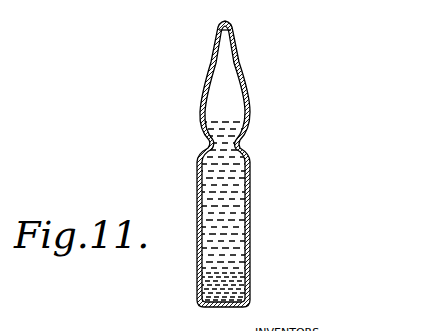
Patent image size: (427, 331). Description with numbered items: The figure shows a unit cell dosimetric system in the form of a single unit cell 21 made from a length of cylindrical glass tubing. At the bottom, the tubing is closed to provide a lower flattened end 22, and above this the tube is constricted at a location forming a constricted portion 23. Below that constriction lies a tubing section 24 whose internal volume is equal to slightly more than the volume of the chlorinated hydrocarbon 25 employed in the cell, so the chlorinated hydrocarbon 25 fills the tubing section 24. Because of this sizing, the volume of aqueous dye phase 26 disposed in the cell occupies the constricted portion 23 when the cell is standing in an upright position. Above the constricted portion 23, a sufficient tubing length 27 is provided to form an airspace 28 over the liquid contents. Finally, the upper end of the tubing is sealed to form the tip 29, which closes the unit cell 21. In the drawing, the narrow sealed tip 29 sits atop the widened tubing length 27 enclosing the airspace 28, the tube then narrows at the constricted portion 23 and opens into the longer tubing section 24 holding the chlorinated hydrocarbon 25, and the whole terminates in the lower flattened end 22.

The unit cell 21 is at (277, 78).
The lower flattened end 22 is at (215, 306).
The constricted portion 23 is at (203, 143).
The tubing section 24 is at (253, 217).
The chlorinated hydrocarbon 25 is at (220, 273).
The aqueous dye phase 26 is at (224, 143).
The tubing length 27 is at (203, 91).
The airspace 28 is at (226, 108).
The tip 29 is at (224, 22).